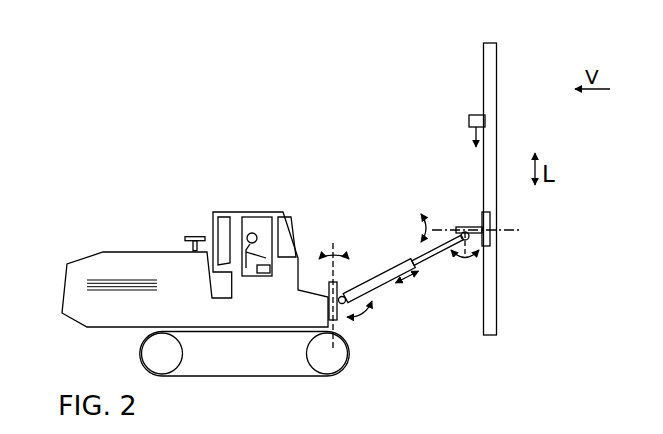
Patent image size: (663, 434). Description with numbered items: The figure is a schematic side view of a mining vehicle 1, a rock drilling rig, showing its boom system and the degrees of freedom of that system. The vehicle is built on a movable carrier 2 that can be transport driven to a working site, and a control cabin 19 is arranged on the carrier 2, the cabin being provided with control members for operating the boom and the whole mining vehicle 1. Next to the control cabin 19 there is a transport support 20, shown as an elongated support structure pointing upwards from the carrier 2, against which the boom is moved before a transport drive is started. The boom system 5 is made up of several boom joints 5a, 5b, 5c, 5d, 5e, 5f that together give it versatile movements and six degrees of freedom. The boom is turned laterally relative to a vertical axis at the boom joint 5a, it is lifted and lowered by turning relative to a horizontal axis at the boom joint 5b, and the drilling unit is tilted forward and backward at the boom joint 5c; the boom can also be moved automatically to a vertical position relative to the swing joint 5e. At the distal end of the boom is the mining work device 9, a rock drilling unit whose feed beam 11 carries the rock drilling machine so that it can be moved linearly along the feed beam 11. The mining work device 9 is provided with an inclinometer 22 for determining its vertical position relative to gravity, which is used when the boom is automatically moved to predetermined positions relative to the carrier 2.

The mining vehicle 1 is at (177, 122).
The carrier 2 is at (93, 252).
The boom joint 5 is at (485, 235).
The boom joint 5a is at (333, 236).
The boom joint 5b is at (355, 282).
The boom joint 5c is at (396, 303).
The boom joint 5d is at (482, 239).
The swing joint 5e is at (456, 214).
The boom joint 5f is at (512, 106).
The mining work device 9 is at (447, 45).
The feed beam 11 is at (485, 60).
The control cabin 19 is at (251, 233).
The transport support 20 is at (193, 236).
The inclinometer 22 is at (470, 124).